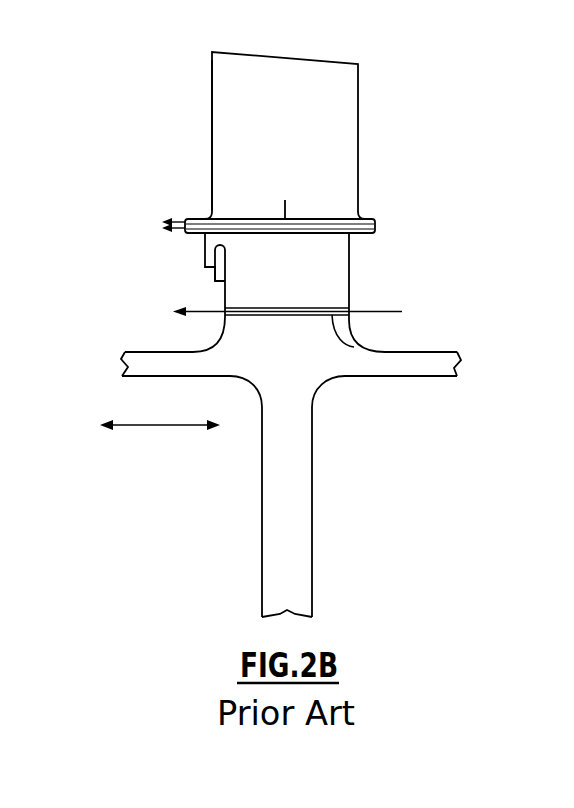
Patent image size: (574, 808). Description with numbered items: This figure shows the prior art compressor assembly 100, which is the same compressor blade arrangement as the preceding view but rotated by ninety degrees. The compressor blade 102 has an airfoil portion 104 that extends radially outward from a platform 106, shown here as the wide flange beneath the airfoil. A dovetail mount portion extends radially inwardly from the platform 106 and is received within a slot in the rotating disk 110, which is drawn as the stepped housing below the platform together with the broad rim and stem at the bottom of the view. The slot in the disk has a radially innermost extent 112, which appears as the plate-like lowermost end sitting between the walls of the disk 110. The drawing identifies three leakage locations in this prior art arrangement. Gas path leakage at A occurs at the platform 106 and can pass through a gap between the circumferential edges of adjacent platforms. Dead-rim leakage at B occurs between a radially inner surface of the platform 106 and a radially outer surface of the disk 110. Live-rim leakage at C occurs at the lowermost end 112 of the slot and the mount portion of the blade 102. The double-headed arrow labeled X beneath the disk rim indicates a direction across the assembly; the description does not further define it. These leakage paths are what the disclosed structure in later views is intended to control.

The compressor section 100 is at (136, 79).
The compressor blade 102 is at (335, 107).
The airfoil portion 104 is at (235, 143).
The platform 106 is at (374, 216).
The rotating disk 110 is at (325, 272).
The radially innermost extent 112 is at (354, 346).
The gas path leakage A is at (184, 220).
The dead-rim leakage B is at (184, 234).
The live-rim leakage C is at (203, 311).
The direction X is at (160, 439).